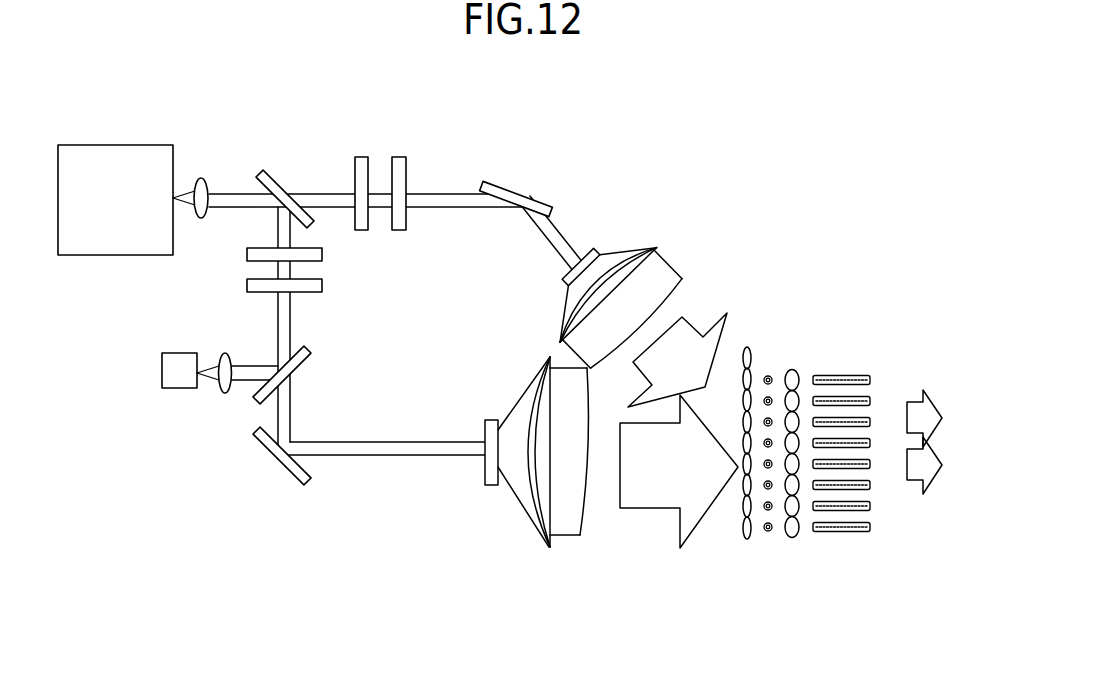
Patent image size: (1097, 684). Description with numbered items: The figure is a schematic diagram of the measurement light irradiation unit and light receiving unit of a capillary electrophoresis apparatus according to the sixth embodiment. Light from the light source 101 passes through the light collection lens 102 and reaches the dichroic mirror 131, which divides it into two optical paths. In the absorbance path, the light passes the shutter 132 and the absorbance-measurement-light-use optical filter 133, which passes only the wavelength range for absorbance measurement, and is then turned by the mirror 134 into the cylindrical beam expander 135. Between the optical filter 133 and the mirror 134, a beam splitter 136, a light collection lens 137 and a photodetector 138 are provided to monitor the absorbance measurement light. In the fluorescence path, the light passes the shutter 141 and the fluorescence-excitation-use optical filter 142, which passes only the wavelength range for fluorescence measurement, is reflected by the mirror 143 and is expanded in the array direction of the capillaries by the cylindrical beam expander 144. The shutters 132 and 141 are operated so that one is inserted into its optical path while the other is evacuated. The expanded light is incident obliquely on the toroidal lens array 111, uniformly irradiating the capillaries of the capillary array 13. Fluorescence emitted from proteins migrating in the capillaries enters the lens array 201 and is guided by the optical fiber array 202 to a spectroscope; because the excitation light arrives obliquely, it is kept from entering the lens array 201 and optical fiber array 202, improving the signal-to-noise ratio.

The light source 101 is at (127, 145).
The light collection lens 102 is at (200, 178).
The dichroic mirror 131 is at (270, 168).
The shutter 132 is at (247, 254).
The absorbance-measurement-light-use optical filter 133 is at (247, 285).
The mirror 134 is at (295, 473).
The cylindrical beam expander 135 is at (562, 557).
The beam splitter 136 is at (307, 363).
The light collection lens 137 is at (225, 395).
The photodetector 138 is at (175, 390).
The shutter 141 is at (358, 157).
The fluorescence-excitation-use optical filter 142 is at (398, 157).
The mirror 143 is at (505, 187).
The cylindrical beam expander 144 is at (609, 282).
The toroidal lens array 111 is at (747, 347).
The capillary array 13 is at (768, 373).
The lens array 201 is at (792, 540).
The optical fiber array 202 is at (850, 534).